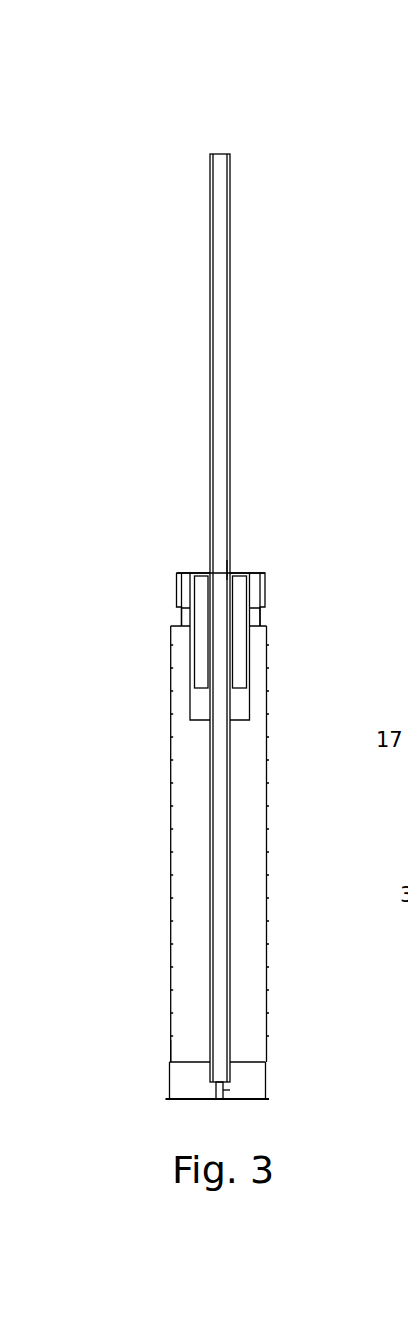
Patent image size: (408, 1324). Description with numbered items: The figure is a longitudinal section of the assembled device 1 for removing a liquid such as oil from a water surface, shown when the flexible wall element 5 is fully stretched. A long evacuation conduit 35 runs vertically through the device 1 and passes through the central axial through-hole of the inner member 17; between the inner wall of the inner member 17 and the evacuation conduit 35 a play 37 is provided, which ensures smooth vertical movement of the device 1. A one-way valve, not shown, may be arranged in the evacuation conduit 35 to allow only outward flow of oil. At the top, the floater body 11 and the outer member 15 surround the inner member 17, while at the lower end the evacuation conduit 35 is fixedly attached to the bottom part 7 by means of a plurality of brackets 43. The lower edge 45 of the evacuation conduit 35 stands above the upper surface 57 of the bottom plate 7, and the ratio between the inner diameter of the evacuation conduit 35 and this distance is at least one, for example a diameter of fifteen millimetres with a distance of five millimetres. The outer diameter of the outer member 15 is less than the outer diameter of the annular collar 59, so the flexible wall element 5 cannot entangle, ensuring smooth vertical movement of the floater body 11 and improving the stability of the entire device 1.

The device 1 is at (166, 92).
The evacuation conduit 35 is at (230, 235).
The play 37 is at (230, 568).
The outer member 15 is at (183, 588).
The inner member 17 is at (200, 670).
The floater body 11 is at (275, 602).
The flexible wall element 5 is at (171, 785).
The annular collar 59 is at (165, 1065).
The upper surface 57 is at (202, 1095).
The lower edge 45 is at (223, 1085).
The bottom part 7 is at (251, 1073).
The brackets 43 is at (222, 1093).